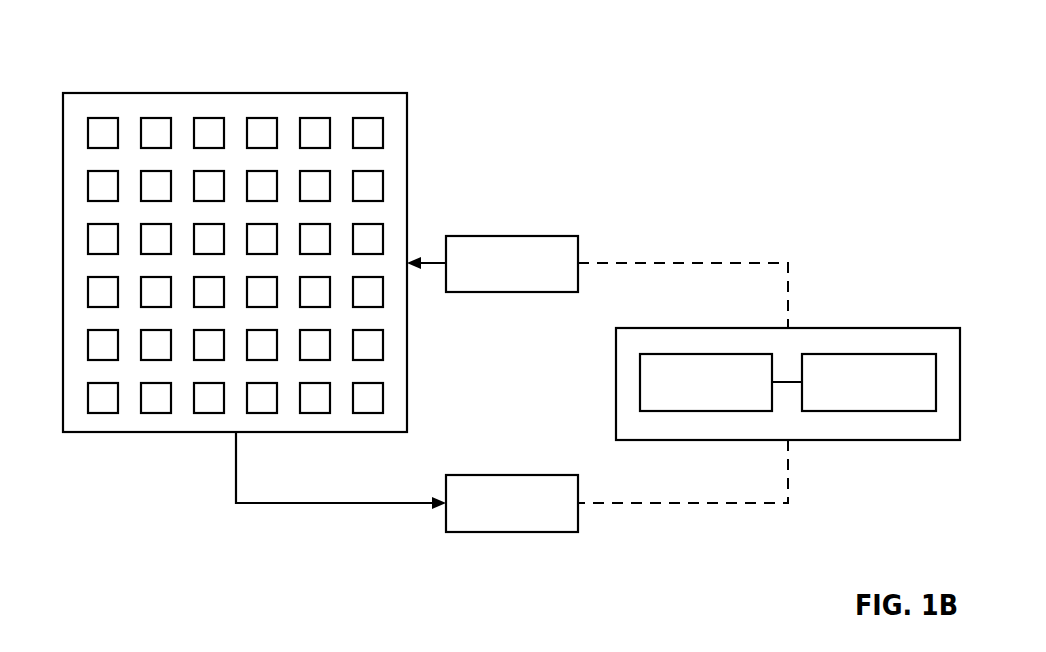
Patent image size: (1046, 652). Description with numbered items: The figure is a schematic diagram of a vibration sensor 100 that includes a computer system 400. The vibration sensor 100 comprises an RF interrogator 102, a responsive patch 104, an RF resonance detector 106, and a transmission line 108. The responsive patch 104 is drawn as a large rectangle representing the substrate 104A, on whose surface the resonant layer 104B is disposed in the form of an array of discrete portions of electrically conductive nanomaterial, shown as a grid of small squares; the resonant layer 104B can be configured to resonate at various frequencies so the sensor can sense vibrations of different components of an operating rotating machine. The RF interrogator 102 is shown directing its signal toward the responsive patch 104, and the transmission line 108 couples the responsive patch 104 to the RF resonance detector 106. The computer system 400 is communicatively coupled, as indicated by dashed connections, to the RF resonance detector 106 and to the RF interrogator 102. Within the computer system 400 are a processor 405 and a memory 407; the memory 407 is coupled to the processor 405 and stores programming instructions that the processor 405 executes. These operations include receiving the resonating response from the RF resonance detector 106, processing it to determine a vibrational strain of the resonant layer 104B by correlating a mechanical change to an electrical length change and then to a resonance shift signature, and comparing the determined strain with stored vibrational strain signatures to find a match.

The vibration sensor 100 is at (776, 55).
The RF interrogator 102 is at (510, 293).
The responsive patch 104 is at (132, 58).
The substrate 104A is at (219, 80).
The resonant layer 104B is at (103, 413).
The RF resonance detector 106 is at (510, 533).
The transmission line 108 is at (340, 504).
The computer system 400 is at (833, 315).
The processor 405 is at (729, 396).
The memory 407 is at (892, 396).